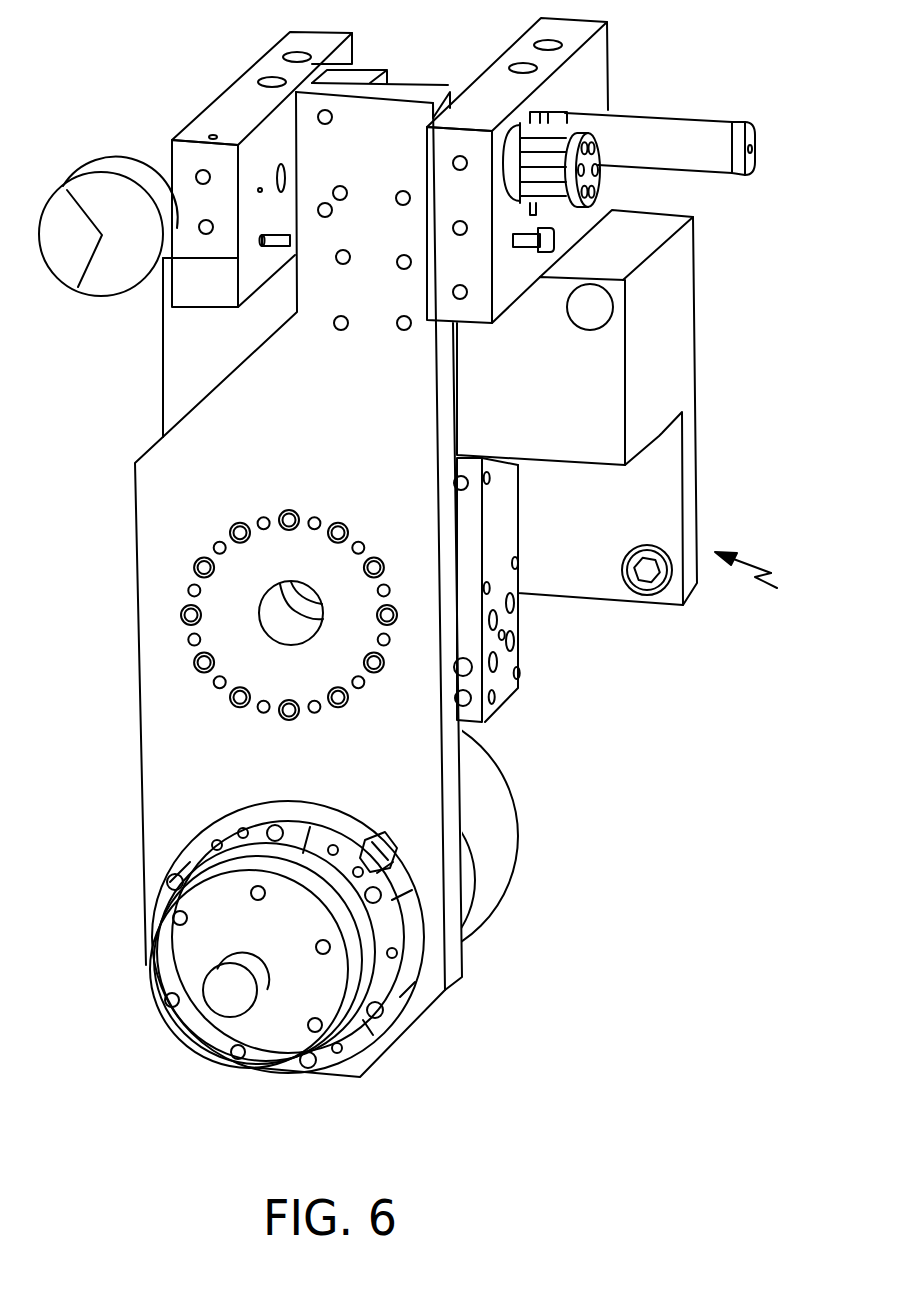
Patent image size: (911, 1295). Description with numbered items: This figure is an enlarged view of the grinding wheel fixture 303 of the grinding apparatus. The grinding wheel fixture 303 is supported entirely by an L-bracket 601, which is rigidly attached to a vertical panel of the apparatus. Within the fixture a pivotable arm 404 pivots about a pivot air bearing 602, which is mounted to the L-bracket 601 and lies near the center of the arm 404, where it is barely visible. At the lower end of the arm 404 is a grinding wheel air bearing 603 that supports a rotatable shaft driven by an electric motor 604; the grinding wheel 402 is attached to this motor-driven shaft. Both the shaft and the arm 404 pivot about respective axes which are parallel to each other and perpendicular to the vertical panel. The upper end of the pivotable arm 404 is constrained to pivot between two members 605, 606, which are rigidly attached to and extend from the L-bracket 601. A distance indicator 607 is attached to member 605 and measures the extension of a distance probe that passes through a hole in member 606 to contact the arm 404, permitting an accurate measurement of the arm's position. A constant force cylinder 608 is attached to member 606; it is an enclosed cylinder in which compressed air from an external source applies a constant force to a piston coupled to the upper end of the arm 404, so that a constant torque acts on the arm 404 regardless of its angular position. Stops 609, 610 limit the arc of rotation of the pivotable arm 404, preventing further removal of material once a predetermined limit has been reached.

The grinding wheel fixture 303 is at (772, 579).
The grinding wheel 402 is at (227, 988).
The pivotable arm 404 is at (345, 424).
The L-bracket 601 is at (606, 424).
The pivot air bearing 602 is at (295, 611).
The grinding wheel air bearing 603 is at (367, 1022).
The electric motor 604 is at (498, 775).
The member 605 is at (212, 102).
The member 606 is at (608, 56).
The distance indicator 607 is at (145, 268).
The constant force cylinder 608 is at (677, 133).
The stop 609 is at (538, 241).
The stop 610 is at (595, 170).